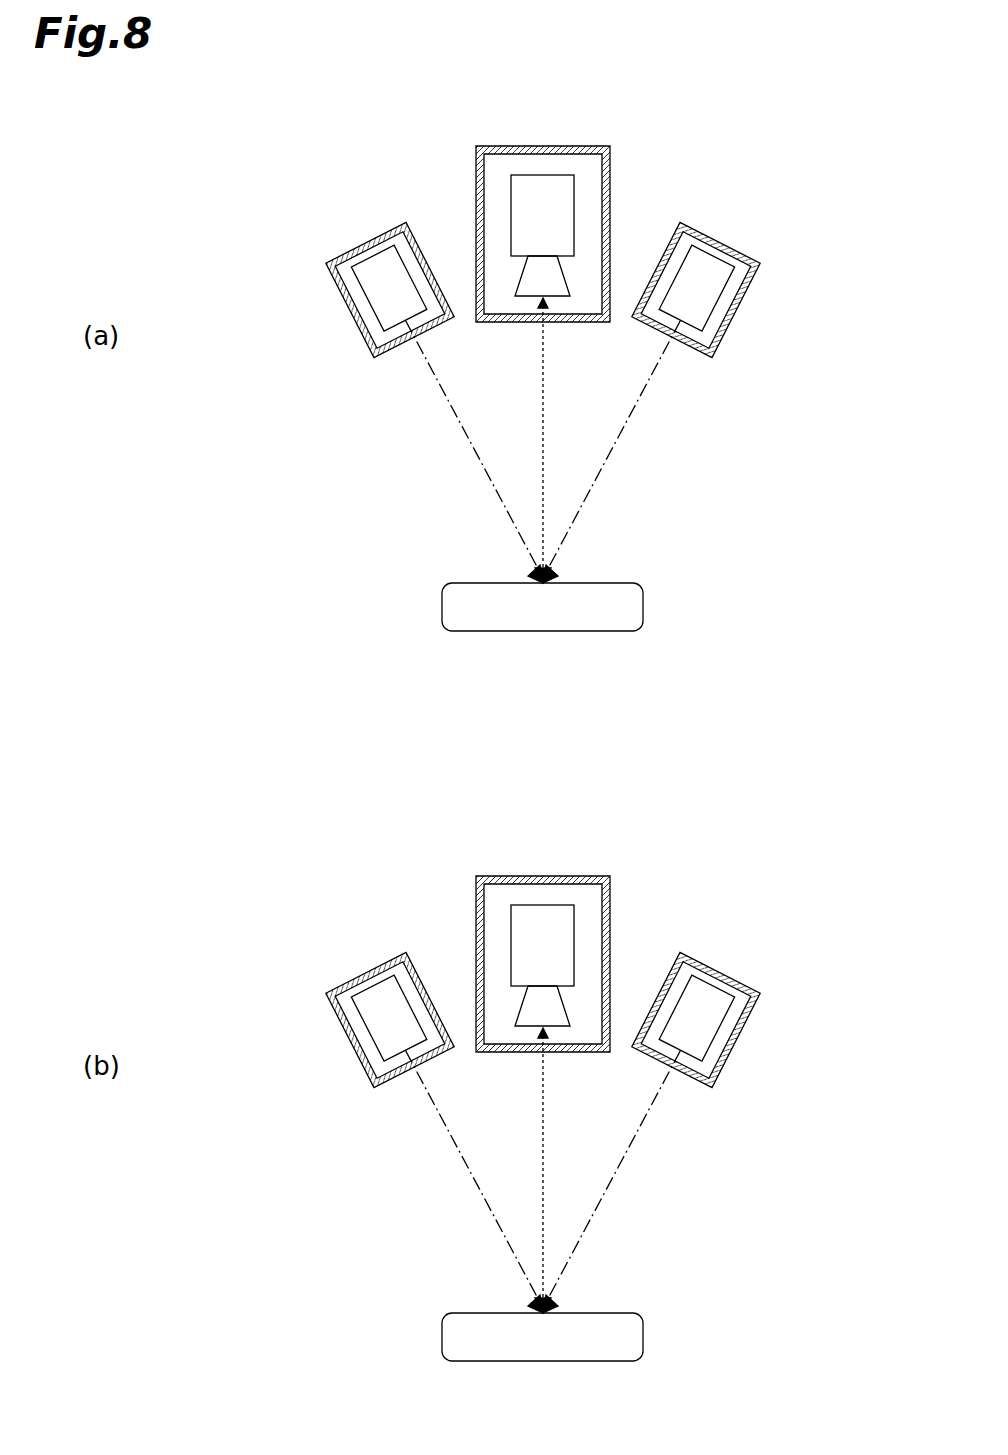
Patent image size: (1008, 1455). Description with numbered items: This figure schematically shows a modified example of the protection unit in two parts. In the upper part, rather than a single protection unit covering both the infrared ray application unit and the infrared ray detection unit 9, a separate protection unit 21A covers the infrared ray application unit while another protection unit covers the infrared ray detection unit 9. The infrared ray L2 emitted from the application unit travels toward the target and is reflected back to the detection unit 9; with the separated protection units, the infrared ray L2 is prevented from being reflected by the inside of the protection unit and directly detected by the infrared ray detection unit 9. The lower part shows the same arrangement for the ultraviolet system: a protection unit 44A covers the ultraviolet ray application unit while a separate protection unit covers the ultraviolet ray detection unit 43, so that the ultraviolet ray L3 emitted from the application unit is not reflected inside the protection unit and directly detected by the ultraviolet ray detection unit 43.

The protection unit 21A is at (470, 138).
The infrared ray detection unit 9 is at (582, 178).
The infrared ray L2 is at (620, 438).
The protection unit 44A is at (520, 911).
The ultraviolet ray detection unit 43 is at (564, 912).
The ultraviolet ray L3 is at (555, 1170).